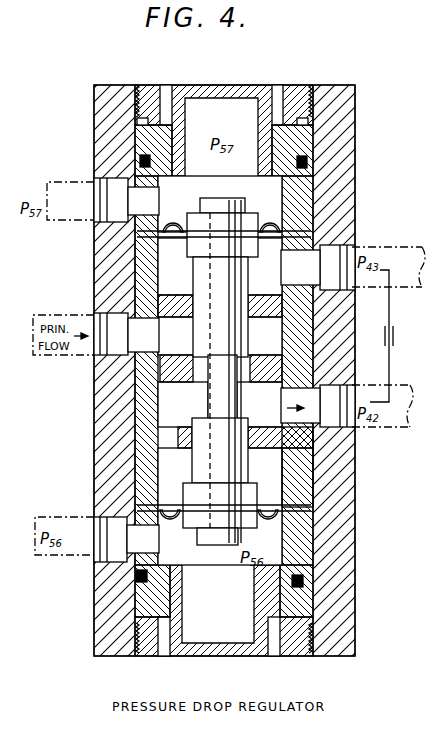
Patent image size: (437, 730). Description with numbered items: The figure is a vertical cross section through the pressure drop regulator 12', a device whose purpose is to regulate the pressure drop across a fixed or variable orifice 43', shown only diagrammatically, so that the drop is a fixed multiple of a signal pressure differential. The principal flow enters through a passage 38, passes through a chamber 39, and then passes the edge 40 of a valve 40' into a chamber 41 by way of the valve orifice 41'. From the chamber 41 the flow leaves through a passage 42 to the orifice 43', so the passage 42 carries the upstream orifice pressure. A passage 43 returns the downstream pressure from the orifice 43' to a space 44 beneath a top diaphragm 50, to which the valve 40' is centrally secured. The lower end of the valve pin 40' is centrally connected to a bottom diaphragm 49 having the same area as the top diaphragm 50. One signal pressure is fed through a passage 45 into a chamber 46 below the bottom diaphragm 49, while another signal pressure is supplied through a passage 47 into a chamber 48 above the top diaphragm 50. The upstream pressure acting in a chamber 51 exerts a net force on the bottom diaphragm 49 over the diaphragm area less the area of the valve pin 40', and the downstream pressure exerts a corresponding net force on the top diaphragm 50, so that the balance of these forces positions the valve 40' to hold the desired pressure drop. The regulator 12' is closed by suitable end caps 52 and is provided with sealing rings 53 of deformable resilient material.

The pressure drop regulator 12' is at (192, 346).
The passage 38 is at (115, 342).
The chamber 39 is at (220, 336).
The edge of valve 40 is at (187, 367).
The valve 40' is at (232, 371).
The chamber 41 is at (183, 404).
The valve orifice 41' is at (259, 402).
The passage 42 is at (331, 410).
The passage 43 is at (338, 249).
The orifice 43' is at (408, 325).
The space 44 is at (220, 266).
The passage 45 is at (113, 542).
The chamber 46 is at (220, 507).
The passage 47 is at (113, 202).
The chamber 48 is at (275, 226).
The bottom diaphragm 49 is at (271, 516).
The top diaphragm 50 is at (308, 168).
The chamber 51 is at (284, 478).
The end caps 52 is at (200, 88).
The sealing rings 53 is at (140, 160).